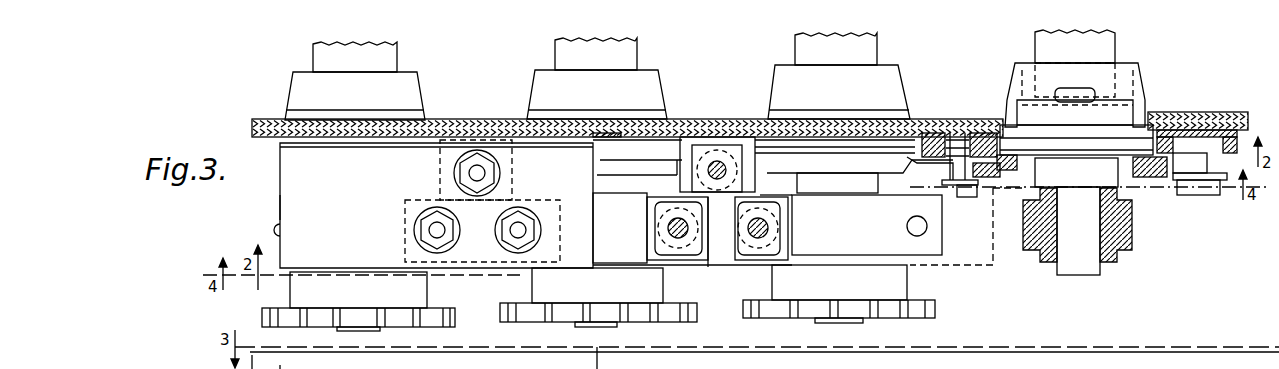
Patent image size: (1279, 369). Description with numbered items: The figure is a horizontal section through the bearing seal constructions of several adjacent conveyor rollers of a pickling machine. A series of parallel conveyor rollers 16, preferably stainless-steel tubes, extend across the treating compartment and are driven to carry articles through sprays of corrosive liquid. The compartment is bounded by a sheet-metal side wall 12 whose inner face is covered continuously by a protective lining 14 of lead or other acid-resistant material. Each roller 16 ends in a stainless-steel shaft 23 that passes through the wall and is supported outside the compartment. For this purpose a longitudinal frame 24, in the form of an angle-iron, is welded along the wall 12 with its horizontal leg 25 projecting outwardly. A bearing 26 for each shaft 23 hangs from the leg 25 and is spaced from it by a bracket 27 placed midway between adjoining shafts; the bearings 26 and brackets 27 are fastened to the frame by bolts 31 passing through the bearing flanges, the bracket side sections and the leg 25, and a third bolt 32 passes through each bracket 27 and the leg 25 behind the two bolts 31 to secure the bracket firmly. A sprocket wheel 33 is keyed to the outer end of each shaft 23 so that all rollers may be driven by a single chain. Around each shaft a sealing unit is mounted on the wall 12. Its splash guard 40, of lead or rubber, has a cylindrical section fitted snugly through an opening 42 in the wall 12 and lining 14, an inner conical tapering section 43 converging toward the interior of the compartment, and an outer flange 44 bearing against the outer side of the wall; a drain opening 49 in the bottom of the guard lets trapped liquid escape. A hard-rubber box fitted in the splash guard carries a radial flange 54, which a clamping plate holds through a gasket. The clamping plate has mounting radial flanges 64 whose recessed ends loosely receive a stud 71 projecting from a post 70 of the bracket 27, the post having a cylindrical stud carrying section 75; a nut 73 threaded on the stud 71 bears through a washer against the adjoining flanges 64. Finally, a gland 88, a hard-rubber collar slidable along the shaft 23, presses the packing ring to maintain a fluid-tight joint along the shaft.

The side wall 12 is at (433, 125).
The protective lining 14 is at (485, 120).
The conveyor roller 16 is at (313, 52).
The splash guard 40 is at (287, 92).
The horizontal leg 25 is at (280, 182).
The longitudinal frame 24 is at (280, 207).
The third bolt 32 is at (470, 173).
The bracket 27 is at (405, 212).
The bolt 31 is at (430, 236).
The bearing 26 is at (635, 208).
The gland 88 is at (848, 185).
The flange 54 is at (828, 150).
The shaft 23 is at (357, 325).
The sprocket wheel 33 is at (432, 310).
The stud carrying section 75 is at (937, 140).
The mounting radial flange 64 is at (922, 170).
The nut 73 is at (945, 185).
The stud 71 is at (950, 205).
The post 70 is at (1242, 165).
The tapering section 43 is at (1140, 72).
The opening 42 is at (1145, 103).
The flange 44 is at (1088, 128).
The opening 49 is at (1072, 88).